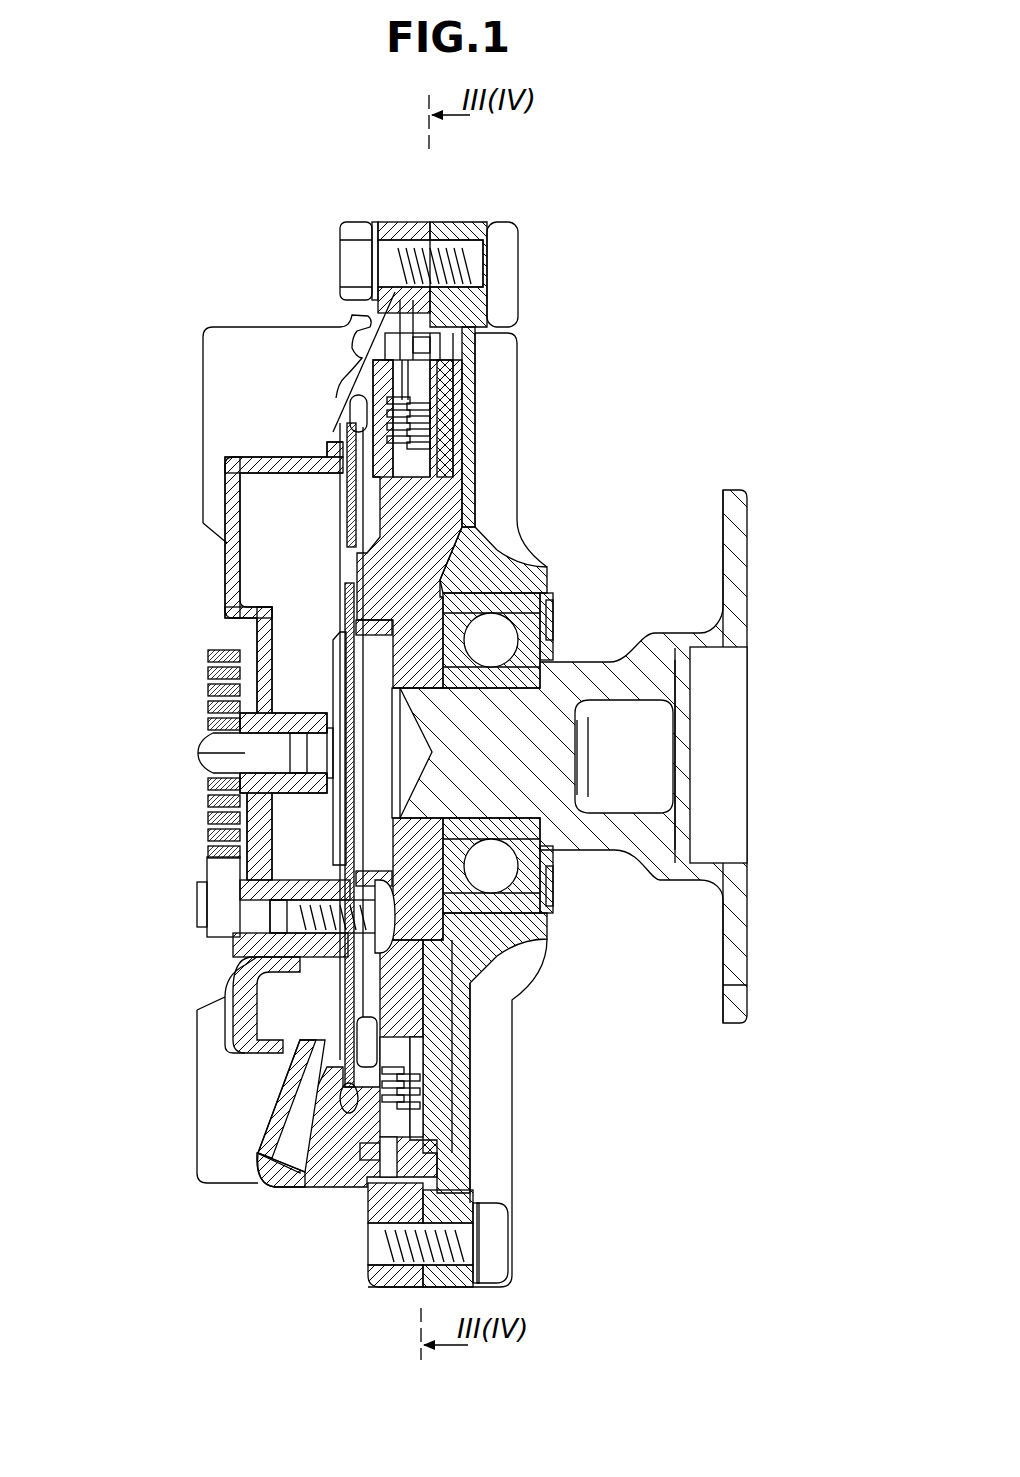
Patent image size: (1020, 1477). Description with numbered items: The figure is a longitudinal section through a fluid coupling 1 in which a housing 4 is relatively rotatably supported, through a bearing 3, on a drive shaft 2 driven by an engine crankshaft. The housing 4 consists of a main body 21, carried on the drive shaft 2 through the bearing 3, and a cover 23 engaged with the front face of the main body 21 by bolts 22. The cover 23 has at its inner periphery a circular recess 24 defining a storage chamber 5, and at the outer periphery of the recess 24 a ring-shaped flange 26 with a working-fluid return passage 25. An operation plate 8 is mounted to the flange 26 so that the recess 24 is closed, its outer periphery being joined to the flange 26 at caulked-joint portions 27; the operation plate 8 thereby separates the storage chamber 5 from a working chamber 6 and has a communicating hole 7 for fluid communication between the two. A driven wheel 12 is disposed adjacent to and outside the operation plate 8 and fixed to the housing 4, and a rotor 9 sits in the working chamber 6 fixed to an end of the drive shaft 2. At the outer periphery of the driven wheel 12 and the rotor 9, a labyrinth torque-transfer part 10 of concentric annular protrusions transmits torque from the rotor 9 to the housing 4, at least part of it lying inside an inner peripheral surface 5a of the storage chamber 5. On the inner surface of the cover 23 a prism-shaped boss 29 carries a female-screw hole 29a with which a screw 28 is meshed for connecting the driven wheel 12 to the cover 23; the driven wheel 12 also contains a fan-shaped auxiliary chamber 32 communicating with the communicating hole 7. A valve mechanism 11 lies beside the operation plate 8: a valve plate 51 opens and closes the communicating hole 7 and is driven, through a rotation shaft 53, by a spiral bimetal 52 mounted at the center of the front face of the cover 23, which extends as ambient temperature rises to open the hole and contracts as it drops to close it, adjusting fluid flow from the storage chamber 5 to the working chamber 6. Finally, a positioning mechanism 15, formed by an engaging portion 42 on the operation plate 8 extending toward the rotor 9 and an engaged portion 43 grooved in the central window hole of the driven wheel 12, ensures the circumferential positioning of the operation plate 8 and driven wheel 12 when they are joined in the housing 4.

The fluid coupling 1 is at (650, 478).
The drive shaft 2 is at (610, 660).
The bearing 3 is at (522, 607).
The housing 4 is at (452, 212).
The storage chamber 5 is at (252, 560).
The inner peripheral surface 5a is at (343, 417).
The working chamber 6 is at (365, 500).
The communicating hole 7 is at (347, 560).
The operation plate 8 is at (420, 512).
The rotor 9 is at (433, 1007).
The labyrinth torque-transfer part 10 is at (440, 410).
The valve mechanism 11 is at (340, 640).
The driven wheel 12 is at (402, 467).
The positioning mechanism 15 is at (482, 508).
The main body 21 is at (463, 227).
The bolts 22 is at (353, 227).
The cover 23 is at (402, 223).
The circular recess 24 is at (223, 592).
The working-fluid return passage 25 is at (297, 1122).
The ring-shaped flange 26 is at (292, 1188).
The caulked-joint portions 27 is at (318, 1153).
The screw 28 is at (383, 923).
The prism-shaped boss 29 is at (283, 945).
The female-screw hole 29a is at (283, 910).
The auxiliary chamber 32 is at (333, 430).
The engaging portion 42 is at (430, 703).
The engaged portion 43 is at (498, 555).
The valve plate 51 is at (330, 668).
The spiral bimetal 52 is at (208, 807).
The rotation shaft 53 is at (225, 742).